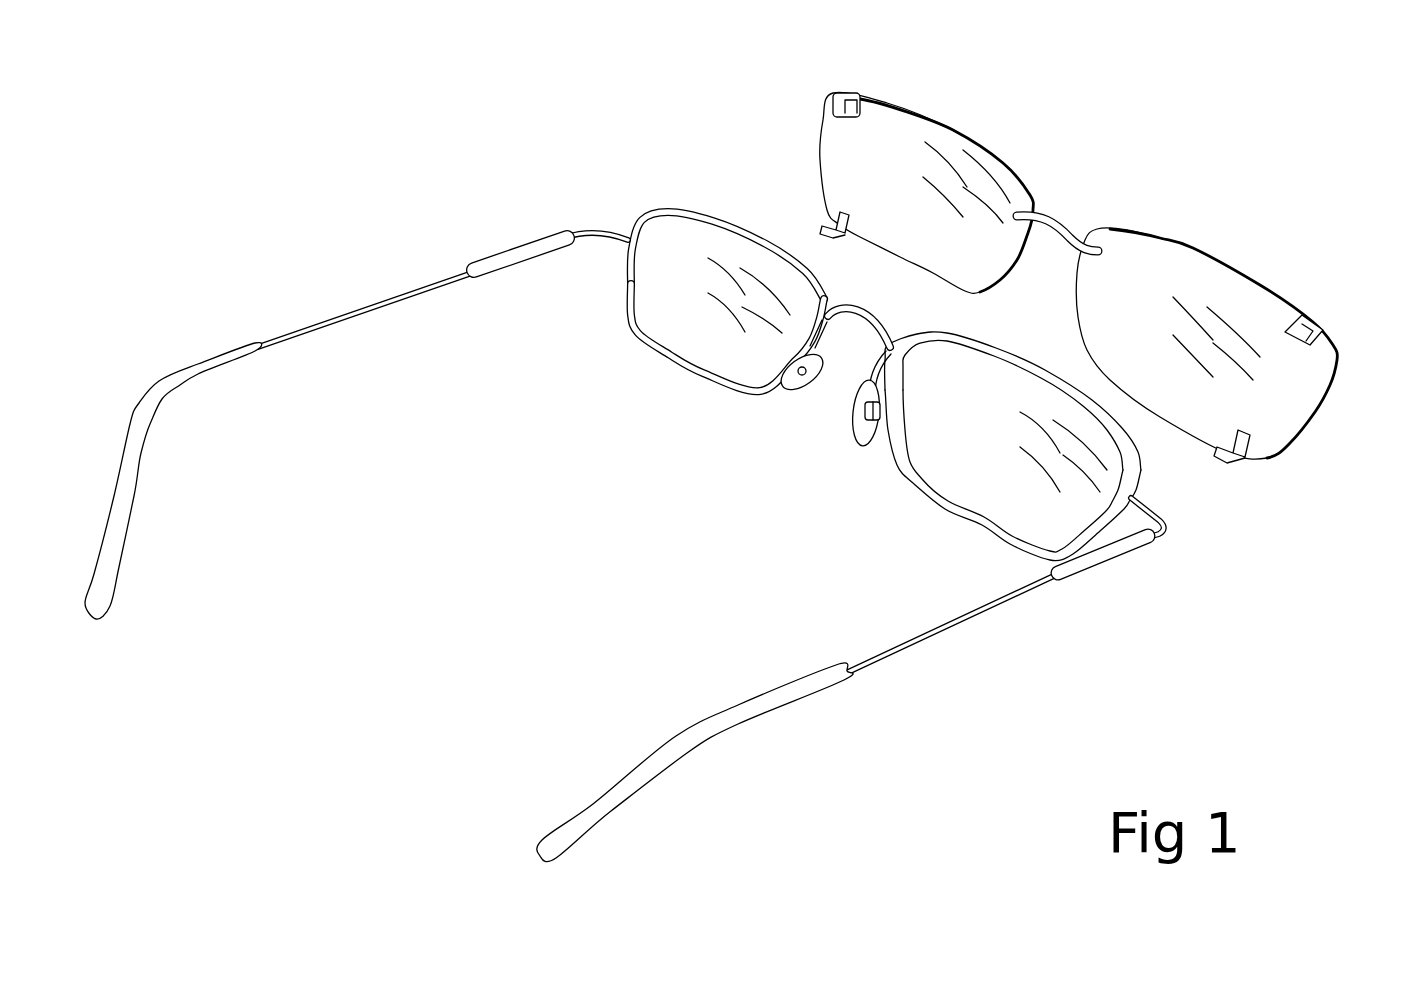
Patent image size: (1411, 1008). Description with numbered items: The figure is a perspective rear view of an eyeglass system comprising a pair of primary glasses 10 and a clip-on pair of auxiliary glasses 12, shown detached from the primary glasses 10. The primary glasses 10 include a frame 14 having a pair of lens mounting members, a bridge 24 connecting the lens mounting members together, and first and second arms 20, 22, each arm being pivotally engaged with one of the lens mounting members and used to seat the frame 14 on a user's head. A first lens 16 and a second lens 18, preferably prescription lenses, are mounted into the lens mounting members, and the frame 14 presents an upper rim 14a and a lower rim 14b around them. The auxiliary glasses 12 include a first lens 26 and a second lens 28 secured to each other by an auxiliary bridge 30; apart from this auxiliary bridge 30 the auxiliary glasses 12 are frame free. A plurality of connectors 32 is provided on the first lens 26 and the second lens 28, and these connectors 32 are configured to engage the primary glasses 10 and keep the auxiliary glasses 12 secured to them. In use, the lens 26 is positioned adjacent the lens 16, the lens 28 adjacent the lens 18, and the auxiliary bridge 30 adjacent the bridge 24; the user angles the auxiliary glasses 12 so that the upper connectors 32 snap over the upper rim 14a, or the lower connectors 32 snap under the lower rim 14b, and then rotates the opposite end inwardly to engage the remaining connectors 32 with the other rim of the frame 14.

The primary glasses 10 is at (1033, 713).
The auxiliary glasses 12 is at (1193, 180).
The frame 14 is at (865, 359).
The upper rim 14a is at (695, 215).
The lower rim 14b is at (722, 385).
The first lens 16 is at (690, 313).
The second lens 18 is at (977, 455).
The first arm 20 is at (294, 328).
The second arm 22 is at (840, 676).
The bridge 24 is at (867, 322).
The first lens 26 is at (952, 163).
The second lens 28 is at (1233, 290).
The auxiliary bridge 30 is at (1067, 223).
The connectors 32 is at (845, 92).